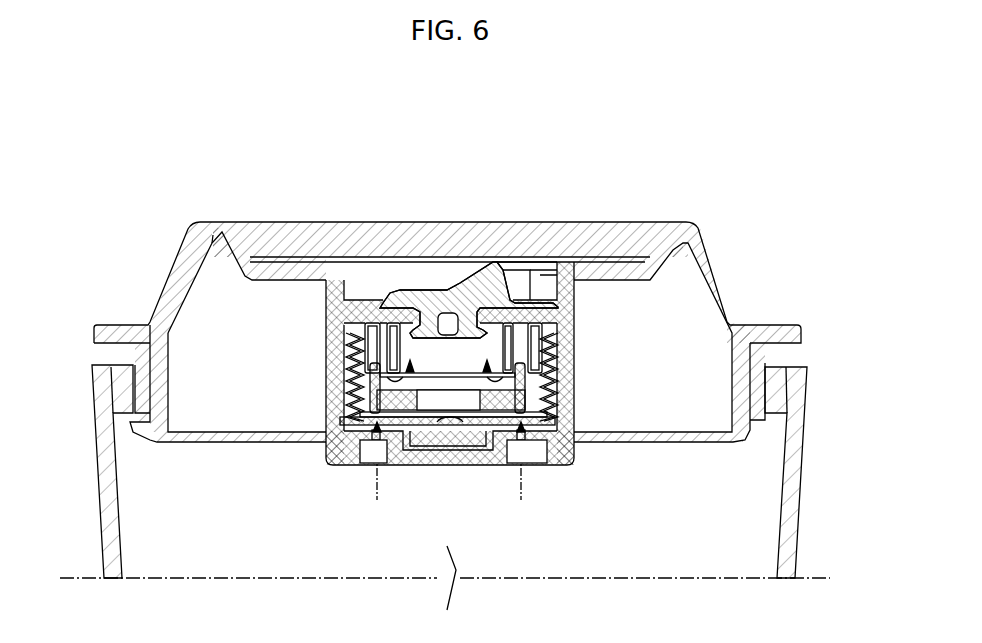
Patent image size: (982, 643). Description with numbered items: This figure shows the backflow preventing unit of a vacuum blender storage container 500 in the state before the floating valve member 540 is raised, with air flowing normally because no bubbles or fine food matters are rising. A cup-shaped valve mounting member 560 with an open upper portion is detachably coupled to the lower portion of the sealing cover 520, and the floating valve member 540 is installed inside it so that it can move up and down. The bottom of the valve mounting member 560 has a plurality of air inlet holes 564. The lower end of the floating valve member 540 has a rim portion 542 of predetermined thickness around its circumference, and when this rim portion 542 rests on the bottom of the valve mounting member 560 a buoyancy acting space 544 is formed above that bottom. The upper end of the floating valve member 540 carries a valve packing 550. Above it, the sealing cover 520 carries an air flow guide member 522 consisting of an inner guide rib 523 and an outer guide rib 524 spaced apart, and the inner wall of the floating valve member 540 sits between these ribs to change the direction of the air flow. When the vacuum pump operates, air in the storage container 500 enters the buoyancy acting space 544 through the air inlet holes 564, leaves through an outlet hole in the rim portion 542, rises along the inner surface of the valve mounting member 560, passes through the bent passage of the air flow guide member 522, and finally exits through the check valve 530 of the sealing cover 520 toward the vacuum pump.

The storage container 500 is at (842, 449).
The sealing cover 520 is at (180, 257).
The air flow guide member 522 is at (577, 190).
The inner guide rib 523 is at (527, 268).
The outer guide rib 524 is at (552, 268).
The check valve 530 is at (490, 262).
The floating valve member 540 is at (323, 365).
The rim portion 542 is at (597, 432).
The buoyancy acting space 544 is at (427, 432).
The valve packing 550 is at (343, 393).
The valve mounting member 560 is at (575, 408).
The air inlet holes 564 is at (557, 465).